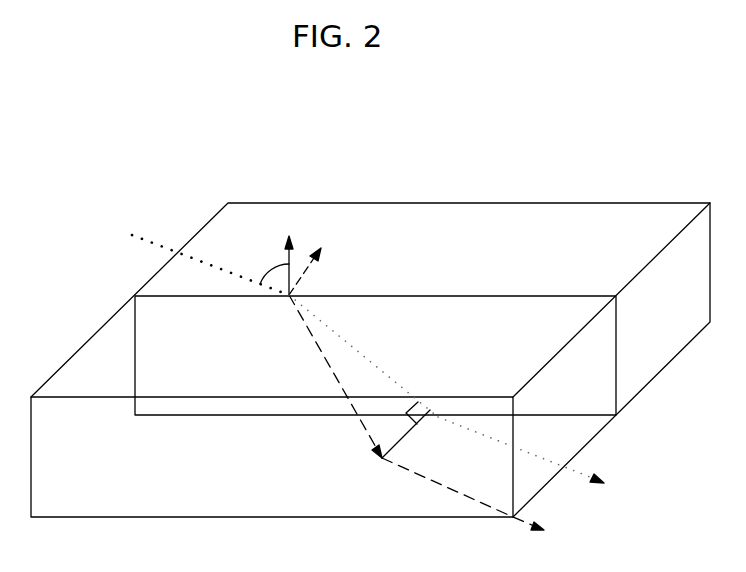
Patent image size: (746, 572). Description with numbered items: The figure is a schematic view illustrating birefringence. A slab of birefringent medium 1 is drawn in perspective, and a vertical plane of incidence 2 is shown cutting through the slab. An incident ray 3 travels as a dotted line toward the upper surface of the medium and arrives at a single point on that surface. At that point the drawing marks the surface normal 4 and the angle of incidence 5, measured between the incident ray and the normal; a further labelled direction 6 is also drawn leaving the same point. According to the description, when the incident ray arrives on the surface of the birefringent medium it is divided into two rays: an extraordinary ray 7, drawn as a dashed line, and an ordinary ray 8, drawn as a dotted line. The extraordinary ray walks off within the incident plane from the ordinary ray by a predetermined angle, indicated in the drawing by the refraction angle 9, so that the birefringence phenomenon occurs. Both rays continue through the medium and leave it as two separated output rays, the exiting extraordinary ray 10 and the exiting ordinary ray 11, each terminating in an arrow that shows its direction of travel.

The birefringent medium block 1 is at (370, 360).
The plane of incidence 2 is at (375, 355).
The incident ray I^i 3 is at (208, 261).
The surface normal N 4 is at (288, 252).
The angle of incidence θ 5 is at (273, 264).
The optic axis A 6 is at (318, 266).
The refracted extraordinary ray I_e^r 7 is at (330, 376).
The refracted ordinary ray I_o^r 8 is at (363, 356).
The refraction angle θ-hat 9 is at (356, 360).
The exiting extraordinary ray I_e^o 10 is at (453, 466).
The exiting ordinary ray I_o^o 11 is at (521, 450).